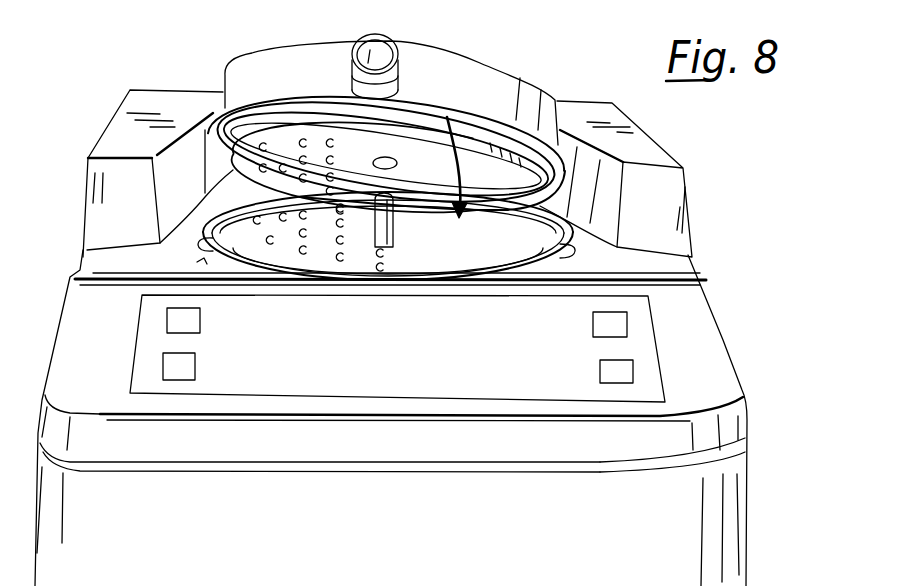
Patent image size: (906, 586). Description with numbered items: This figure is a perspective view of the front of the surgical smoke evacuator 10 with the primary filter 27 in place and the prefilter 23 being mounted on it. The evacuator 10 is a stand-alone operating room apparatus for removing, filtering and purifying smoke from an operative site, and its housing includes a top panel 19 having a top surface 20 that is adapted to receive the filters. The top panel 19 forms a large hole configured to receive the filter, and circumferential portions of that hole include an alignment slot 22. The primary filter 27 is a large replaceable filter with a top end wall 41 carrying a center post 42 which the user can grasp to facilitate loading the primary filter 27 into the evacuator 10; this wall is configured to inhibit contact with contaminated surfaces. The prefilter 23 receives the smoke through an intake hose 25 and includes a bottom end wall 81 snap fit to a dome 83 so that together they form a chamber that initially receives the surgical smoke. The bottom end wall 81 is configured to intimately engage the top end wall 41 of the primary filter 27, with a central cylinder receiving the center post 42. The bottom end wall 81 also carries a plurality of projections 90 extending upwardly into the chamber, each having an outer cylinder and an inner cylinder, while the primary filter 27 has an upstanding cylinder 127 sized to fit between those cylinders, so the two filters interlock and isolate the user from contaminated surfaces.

The surgical smoke evacuator 10 is at (735, 275).
The top panel 19 is at (123, 262).
The top surface 20 is at (205, 264).
The alignment slot 22 is at (240, 263).
The prefilter 23 is at (233, 56).
The intake hose 25 is at (392, 43).
The primary filter 27 is at (502, 248).
The top end wall 41 is at (477, 253).
The center post 42 is at (396, 222).
The bottom end wall 81 is at (477, 172).
The dome 83 is at (303, 70).
The projections 90 is at (388, 188).
The upstanding cylinder 127 is at (328, 265).